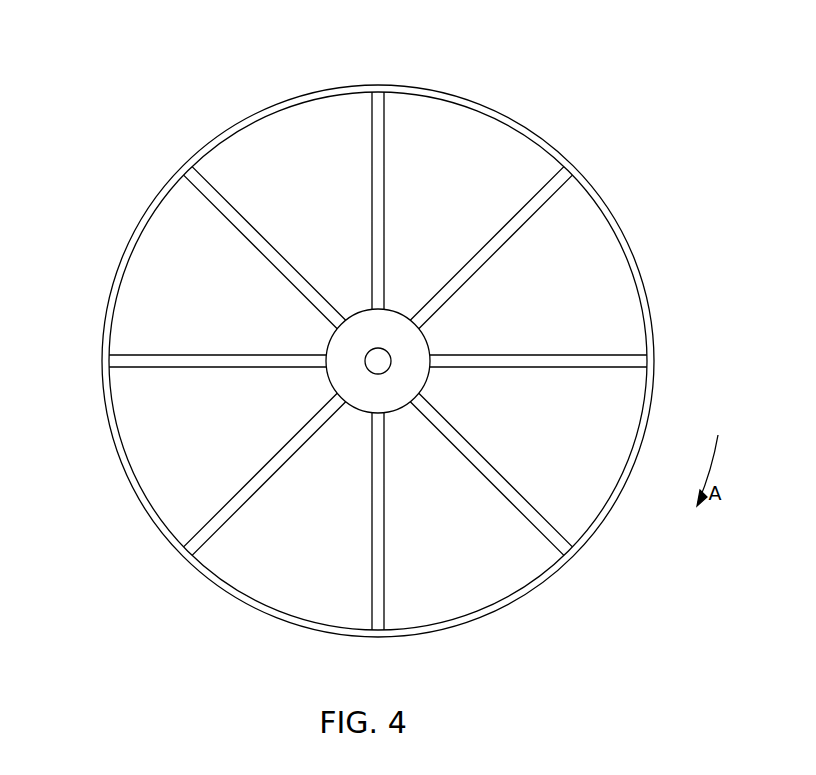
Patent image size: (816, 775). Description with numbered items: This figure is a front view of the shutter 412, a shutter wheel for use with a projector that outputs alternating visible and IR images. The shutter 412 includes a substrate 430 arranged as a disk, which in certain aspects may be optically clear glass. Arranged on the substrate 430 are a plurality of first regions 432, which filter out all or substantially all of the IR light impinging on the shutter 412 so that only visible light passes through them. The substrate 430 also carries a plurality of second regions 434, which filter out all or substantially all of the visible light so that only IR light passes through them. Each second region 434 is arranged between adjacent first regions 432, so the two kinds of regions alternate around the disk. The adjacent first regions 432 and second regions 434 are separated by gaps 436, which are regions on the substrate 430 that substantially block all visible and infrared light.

The shutter 412 is at (540, 123).
The substrate 430 is at (637, 267).
The first regions 432 is at (302, 117).
The second regions 434 is at (460, 122).
The gaps 436 is at (380, 88).